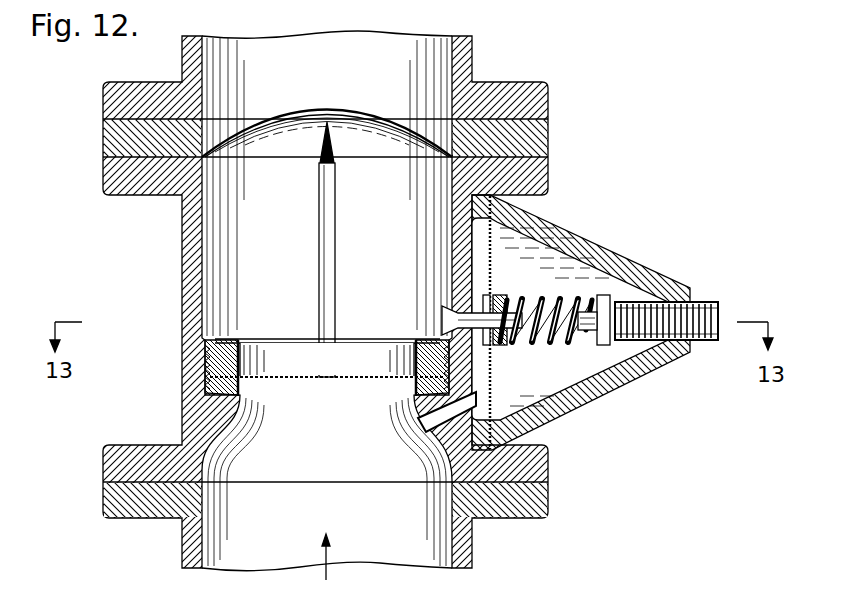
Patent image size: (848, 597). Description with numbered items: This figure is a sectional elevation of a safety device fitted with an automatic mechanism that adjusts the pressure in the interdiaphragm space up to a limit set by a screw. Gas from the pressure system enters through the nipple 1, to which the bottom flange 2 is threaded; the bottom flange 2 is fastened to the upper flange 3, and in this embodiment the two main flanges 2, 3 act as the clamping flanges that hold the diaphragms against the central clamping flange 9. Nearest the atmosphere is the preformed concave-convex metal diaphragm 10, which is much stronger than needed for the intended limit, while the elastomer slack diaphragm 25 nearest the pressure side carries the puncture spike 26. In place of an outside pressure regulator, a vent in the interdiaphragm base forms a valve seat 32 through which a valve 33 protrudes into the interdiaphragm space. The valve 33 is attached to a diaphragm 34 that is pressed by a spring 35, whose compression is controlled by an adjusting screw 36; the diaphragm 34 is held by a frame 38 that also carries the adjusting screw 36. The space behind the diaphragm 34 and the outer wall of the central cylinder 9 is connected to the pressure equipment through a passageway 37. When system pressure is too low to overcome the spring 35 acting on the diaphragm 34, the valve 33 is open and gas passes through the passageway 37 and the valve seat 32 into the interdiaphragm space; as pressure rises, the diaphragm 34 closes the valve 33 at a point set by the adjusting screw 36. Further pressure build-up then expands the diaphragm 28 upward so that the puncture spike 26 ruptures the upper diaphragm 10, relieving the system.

The nipple 1 is at (472, 548).
The bottom flange 2 is at (548, 494).
The upper flange 3 is at (548, 110).
The central clamping flange 9 is at (548, 186).
The upper diaphragm 10 is at (345, 108).
The elastomer slack diaphragm 25 is at (350, 380).
The puncture spike 26 is at (337, 235).
The diaphragm 28 is at (362, 372).
The valve seat 32 is at (456, 312).
The valve 33 is at (478, 307).
The diaphragm 34 is at (494, 372).
The spring 35 is at (566, 300).
The adjusting screw 36 is at (695, 300).
The passageway 37 is at (446, 425).
The frame 38 is at (608, 384).